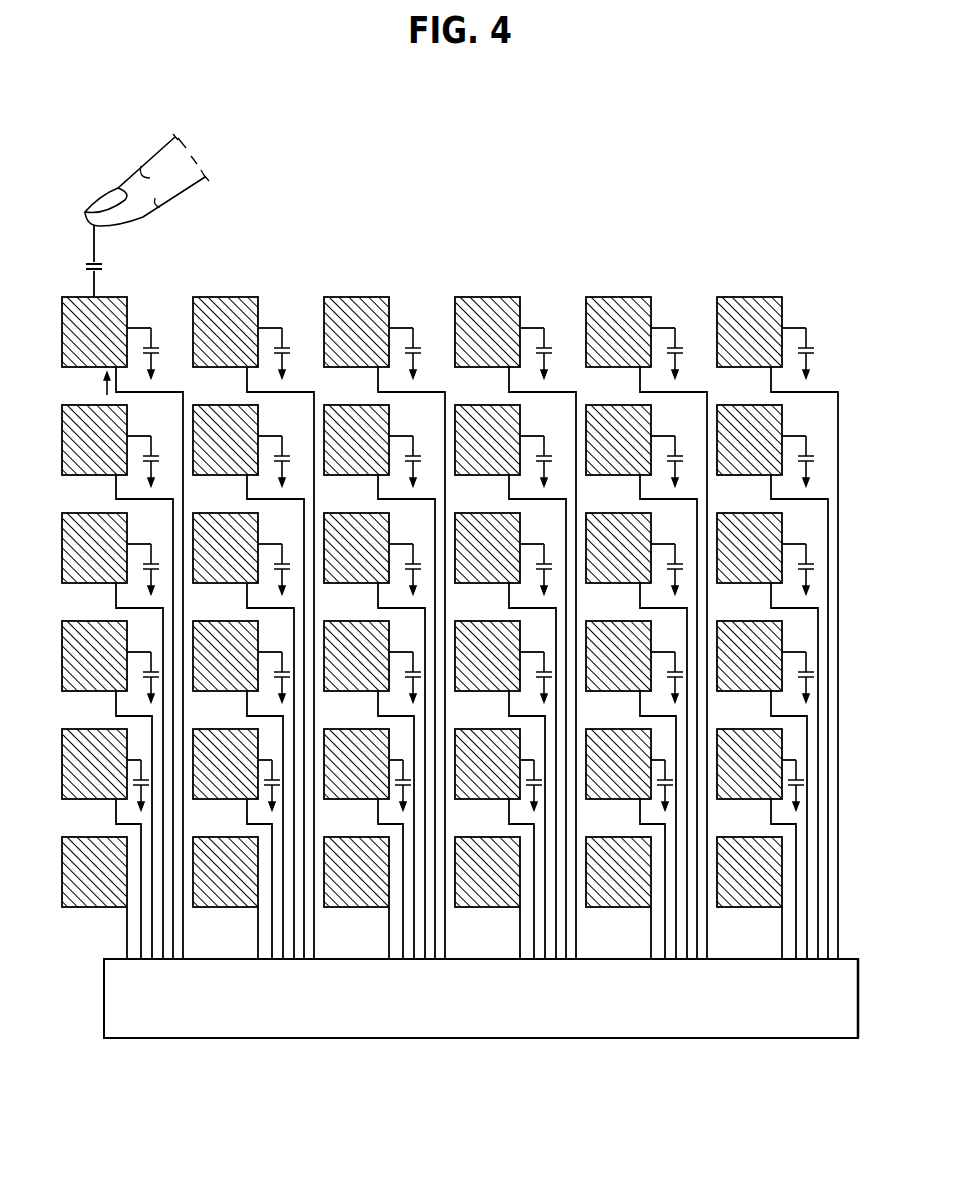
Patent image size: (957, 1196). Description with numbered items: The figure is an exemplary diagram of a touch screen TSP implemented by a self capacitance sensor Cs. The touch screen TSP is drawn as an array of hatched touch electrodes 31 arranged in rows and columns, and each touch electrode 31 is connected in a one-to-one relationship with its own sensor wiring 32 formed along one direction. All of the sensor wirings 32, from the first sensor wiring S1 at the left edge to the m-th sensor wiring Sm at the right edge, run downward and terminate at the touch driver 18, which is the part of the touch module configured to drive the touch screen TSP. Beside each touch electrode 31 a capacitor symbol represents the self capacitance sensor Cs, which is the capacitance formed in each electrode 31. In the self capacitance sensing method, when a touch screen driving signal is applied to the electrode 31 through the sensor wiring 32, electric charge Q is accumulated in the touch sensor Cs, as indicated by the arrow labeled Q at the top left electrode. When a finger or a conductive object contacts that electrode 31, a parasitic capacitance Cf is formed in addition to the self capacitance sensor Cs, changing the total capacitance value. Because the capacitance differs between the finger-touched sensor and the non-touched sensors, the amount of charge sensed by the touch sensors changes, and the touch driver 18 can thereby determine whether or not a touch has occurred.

The touch electrode 31 is at (748, 297).
The sensor wiring 32 is at (825, 392).
The touch driver 18 is at (494, 1007).
The touch screen TSP is at (507, 256).
The parasitic capacitance Cf is at (133, 215).
The self capacitance sensor Cs is at (169, 335).
The electric charge Q is at (97, 386).
The first sensor wiring S1 is at (108, 941).
The m-th sensor wiring Sm is at (853, 943).